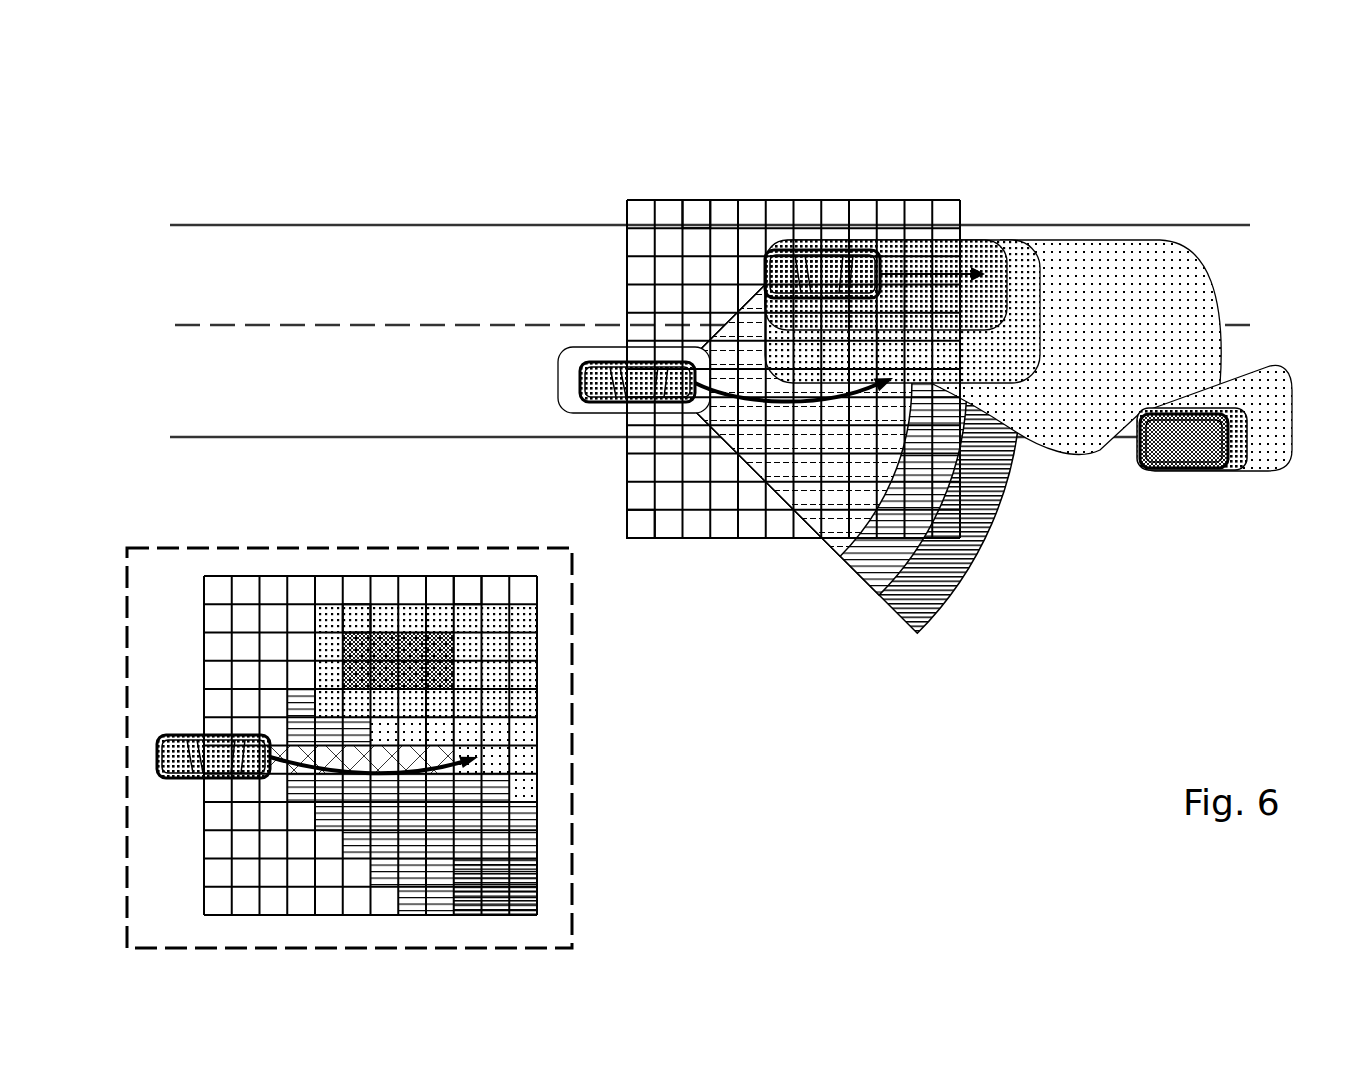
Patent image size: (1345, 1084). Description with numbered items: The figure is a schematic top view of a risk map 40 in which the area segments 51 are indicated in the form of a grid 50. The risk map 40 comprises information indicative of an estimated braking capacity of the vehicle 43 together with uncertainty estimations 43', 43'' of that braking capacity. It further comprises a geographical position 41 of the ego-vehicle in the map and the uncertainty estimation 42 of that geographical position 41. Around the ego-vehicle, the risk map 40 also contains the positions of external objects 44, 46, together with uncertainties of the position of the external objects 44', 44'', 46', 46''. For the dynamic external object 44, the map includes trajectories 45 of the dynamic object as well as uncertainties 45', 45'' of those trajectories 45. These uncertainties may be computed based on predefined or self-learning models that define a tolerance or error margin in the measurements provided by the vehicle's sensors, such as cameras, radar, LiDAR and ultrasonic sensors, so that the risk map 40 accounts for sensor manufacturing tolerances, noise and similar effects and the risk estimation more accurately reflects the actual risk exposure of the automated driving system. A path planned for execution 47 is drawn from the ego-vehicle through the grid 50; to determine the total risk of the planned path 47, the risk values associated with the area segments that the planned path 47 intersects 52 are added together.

The risk map 40 is at (700, 658).
The geographical position of the ego-vehicle 41 is at (620, 402).
The uncertainty estimation of the geographical position 42 is at (578, 408).
The estimated braking capacity of the vehicle 43 is at (789, 399).
The uncertainty estimation of the braking capacity 43' is at (817, 423).
The uncertainty estimation of the braking capacity 43'' is at (844, 424).
The external object 44 is at (822, 221).
The uncertainty of the position of the external object 44' is at (886, 237).
The uncertainty of the position of the external object 44'' is at (991, 219).
The trajectory of dynamic object 45 is at (902, 248).
The uncertainty of the trajectory 45' is at (993, 312).
The uncertainty of the trajectory 45'' is at (952, 413).
The external object 46 is at (1166, 483).
The uncertainty of the position of the external object 46' is at (1192, 475).
The second other vehicle uncertainty region 46'' is at (1226, 386).
The path planned for execution 47 is at (763, 390).
The grid 50 is at (624, 150).
The area segments 51 is at (700, 210).
The intersected area segments 52 is at (473, 750).